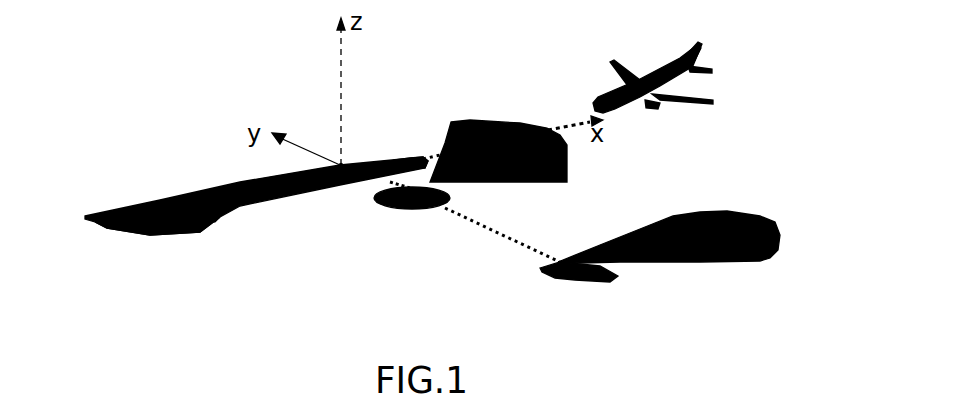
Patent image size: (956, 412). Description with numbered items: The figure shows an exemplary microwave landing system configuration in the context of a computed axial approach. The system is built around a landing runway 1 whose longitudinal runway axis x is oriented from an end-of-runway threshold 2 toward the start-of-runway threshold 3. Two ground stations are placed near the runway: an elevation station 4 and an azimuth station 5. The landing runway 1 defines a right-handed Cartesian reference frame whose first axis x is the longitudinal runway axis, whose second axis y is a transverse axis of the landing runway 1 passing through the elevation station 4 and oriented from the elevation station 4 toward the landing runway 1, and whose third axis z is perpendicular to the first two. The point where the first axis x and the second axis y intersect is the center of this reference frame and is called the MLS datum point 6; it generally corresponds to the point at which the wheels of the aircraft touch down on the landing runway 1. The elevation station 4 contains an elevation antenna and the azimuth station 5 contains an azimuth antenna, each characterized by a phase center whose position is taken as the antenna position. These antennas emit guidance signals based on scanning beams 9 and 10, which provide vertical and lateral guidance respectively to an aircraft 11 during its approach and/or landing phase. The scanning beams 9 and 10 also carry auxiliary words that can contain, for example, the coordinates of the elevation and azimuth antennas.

The landing runway 1 is at (298, 200).
The end-of-runway threshold 2 is at (110, 228).
The start-of-runway threshold 3 is at (395, 157).
The elevation station 4 is at (405, 210).
The azimuth station 5 is at (552, 280).
The MLS datum point 6 is at (342, 165).
The scanning beam 9 is at (518, 183).
The scanning beam 10 is at (735, 215).
The aircraft 11 is at (680, 78).